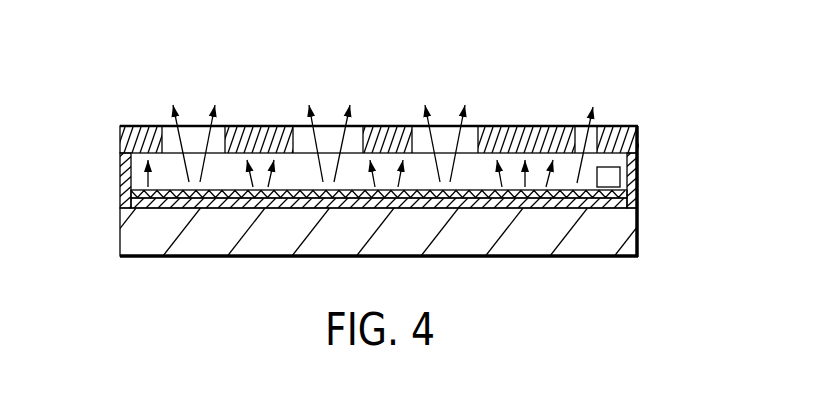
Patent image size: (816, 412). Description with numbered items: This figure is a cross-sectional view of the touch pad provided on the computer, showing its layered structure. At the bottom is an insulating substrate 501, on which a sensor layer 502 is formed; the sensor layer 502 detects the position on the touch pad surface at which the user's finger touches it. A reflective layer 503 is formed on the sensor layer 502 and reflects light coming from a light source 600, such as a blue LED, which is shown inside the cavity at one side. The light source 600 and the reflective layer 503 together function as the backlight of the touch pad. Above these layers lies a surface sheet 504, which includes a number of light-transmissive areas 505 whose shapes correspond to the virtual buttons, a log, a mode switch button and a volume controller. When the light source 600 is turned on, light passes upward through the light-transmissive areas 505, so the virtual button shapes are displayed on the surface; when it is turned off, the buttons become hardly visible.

The insulating substrate 501 is at (628, 232).
The sensor layer 502 is at (150, 205).
The reflective layer 503 is at (140, 197).
The surface sheet 504 is at (637, 133).
The light-transmissive areas 505 is at (193, 140).
The light source 600 is at (612, 177).